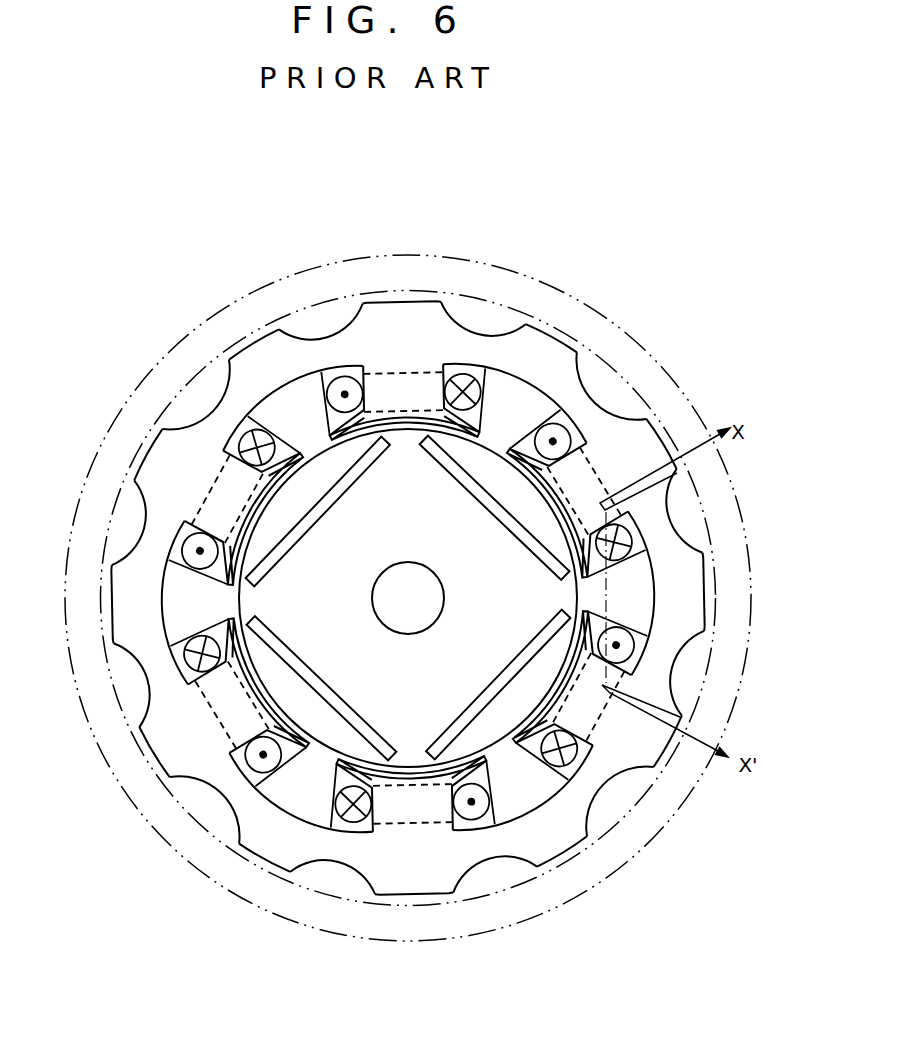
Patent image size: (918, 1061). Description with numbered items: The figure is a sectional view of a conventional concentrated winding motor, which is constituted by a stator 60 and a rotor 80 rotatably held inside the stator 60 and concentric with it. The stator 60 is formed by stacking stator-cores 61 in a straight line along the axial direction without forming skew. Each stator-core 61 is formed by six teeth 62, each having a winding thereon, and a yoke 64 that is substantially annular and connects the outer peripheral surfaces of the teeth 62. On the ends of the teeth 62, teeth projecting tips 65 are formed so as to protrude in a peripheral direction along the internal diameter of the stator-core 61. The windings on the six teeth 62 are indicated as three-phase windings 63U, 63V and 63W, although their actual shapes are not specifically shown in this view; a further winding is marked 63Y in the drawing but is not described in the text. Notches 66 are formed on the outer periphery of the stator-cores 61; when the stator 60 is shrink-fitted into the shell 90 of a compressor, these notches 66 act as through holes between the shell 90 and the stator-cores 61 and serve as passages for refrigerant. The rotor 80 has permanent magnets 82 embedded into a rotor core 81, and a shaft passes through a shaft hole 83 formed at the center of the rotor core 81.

The stator 60 is at (406, 609).
The stator-core 61 is at (210, 772).
The teeth 62 is at (227, 517).
The three-phase winding 63U is at (632, 535).
The three-phase winding 63V is at (480, 398).
The three-phase winding 63W is at (250, 428).
The coil 63Y is at (352, 822).
The yoke 64 is at (547, 838).
The teeth projecting tips 65 is at (623, 572).
The notches 66 is at (603, 793).
The rotor 80 is at (495, 620).
The rotor core 81 is at (520, 598).
The permanent magnets 82 is at (343, 708).
The shaft hole 83 is at (398, 584).
The shell 90 is at (648, 374).